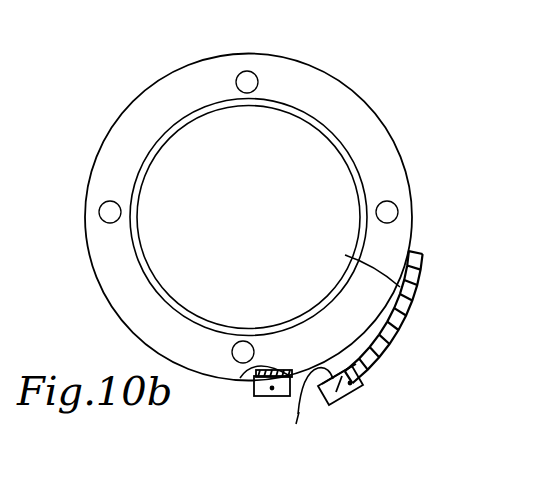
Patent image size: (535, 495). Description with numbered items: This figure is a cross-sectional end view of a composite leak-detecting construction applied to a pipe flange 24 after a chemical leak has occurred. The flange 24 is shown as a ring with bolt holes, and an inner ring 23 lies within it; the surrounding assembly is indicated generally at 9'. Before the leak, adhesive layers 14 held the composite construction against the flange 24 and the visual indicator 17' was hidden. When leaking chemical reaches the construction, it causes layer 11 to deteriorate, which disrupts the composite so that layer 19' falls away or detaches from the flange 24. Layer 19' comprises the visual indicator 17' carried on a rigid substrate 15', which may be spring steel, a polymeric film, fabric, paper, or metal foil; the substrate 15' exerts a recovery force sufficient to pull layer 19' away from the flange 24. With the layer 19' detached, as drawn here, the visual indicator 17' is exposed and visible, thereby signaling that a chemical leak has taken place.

The flange 24 is at (178, 68).
The inner ring 23 is at (294, 115).
The flange assembly 9' is at (11, 253).
The adhesive layers 14 is at (212, 398).
The rigid substrate 15' is at (410, 317).
The layer 11 is at (353, 403).
The visual indicator 17' is at (302, 422).
The layer 19' is at (422, 388).